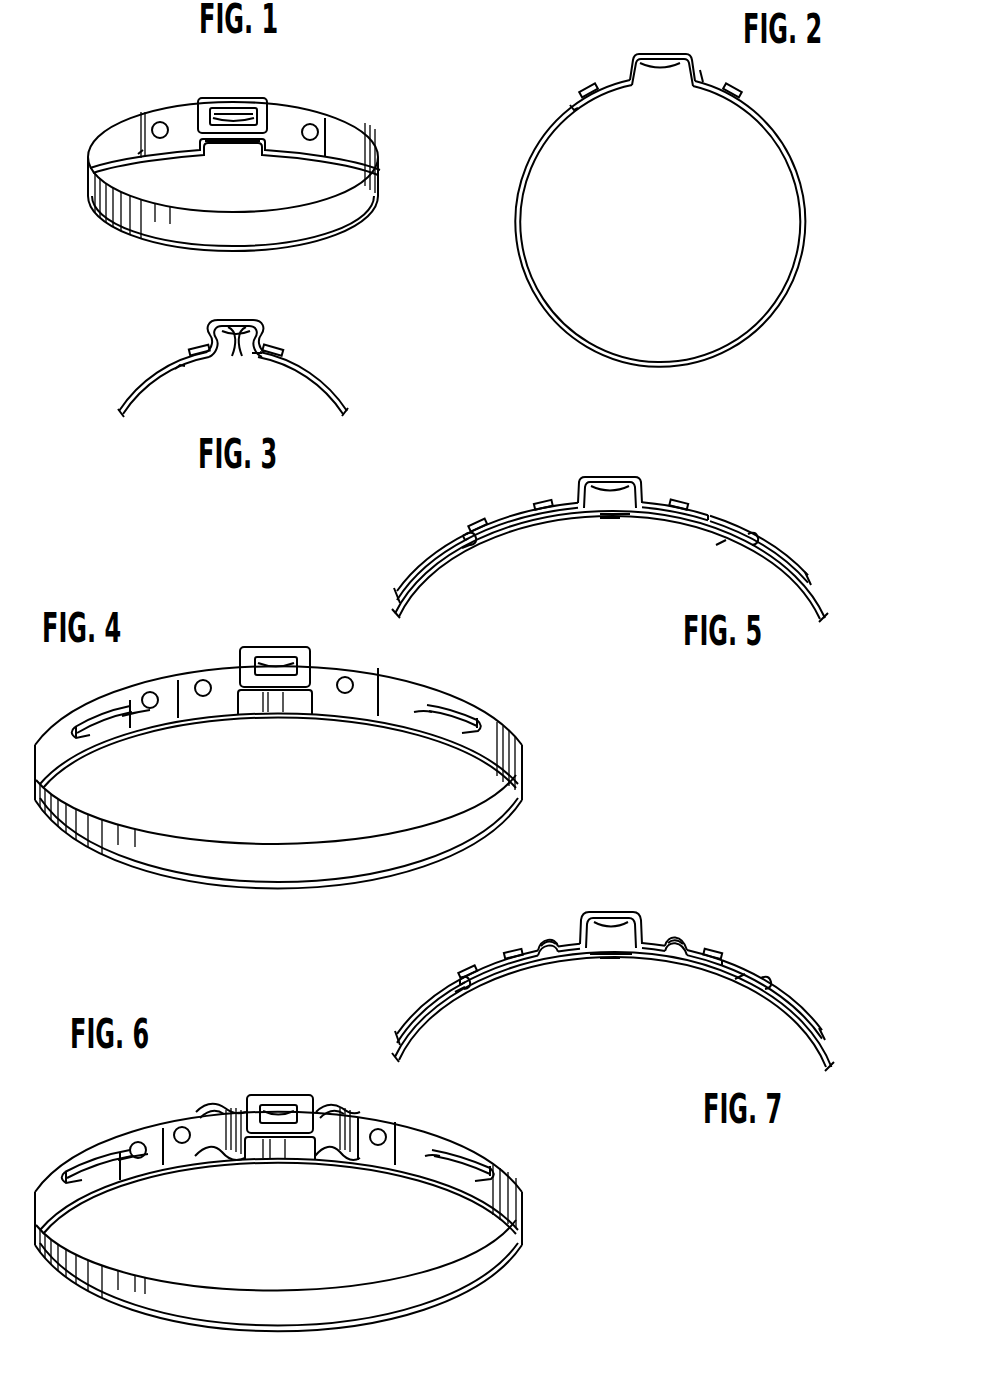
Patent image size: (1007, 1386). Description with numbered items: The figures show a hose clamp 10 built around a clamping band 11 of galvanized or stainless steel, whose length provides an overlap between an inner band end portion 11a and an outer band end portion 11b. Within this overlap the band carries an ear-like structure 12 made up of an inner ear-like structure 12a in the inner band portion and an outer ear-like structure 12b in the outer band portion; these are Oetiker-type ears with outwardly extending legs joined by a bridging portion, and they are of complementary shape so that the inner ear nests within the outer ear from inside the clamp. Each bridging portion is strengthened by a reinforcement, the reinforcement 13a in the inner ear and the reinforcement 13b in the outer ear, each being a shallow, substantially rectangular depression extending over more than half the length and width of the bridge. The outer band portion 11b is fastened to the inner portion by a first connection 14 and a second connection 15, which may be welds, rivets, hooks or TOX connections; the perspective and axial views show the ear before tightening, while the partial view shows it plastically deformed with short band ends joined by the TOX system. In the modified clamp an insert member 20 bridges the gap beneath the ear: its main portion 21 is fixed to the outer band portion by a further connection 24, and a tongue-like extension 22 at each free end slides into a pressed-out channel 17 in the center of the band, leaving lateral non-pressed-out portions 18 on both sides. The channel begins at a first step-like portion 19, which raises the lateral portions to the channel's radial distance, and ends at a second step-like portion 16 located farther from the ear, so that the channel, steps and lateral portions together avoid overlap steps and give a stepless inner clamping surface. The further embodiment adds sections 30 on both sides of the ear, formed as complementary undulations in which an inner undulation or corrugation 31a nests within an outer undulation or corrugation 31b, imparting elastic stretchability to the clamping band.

In FIG. 1, the hose clamp 10 is at (386, 164).
In FIG. 6, the hose clamp 10 is at (530, 1250).
In FIG. 1, the clamping band 11 is at (320, 226).
In FIG. 2, the clamping band 11 is at (555, 314).
In FIG. 3, the clamping band 11 is at (233, 384).
In FIG. 4, the clamping band 11 is at (340, 856).
In FIG. 5, the clamping band 11 is at (610, 566).
In FIG. 6, the clamping band 11 is at (305, 1305).
In FIG. 7, the clamping band 11 is at (613, 1011).
In FIG. 1, the inner band end portion 11a is at (162, 160).
In FIG. 2, the inner band end portion 11a is at (600, 98).
In FIG. 3, the inner band end portion 11a is at (200, 366).
In FIG. 4, the inner band end portion 11a is at (196, 716).
In FIG. 5, the inner band end portion 11a is at (555, 516).
In FIG. 6, the inner band end portion 11a is at (180, 1166).
In FIG. 7, the inner band end portion 11a is at (510, 966).
In FIG. 1, the outer band end portion 11b is at (290, 118).
In FIG. 2, the outer band end portion 11b is at (703, 78).
In FIG. 3, the outer band end portion 11b is at (255, 352).
In FIG. 4, the outer band end portion 11b is at (325, 684).
In FIG. 5, the outer band end portion 11b is at (655, 496).
In FIG. 6, the outer band end portion 11b is at (370, 1130).
In FIG. 7, the outer band end portion 11b is at (726, 961).
In FIG. 1, the ear-like structure 12 is at (254, 95).
In FIG. 2, the ear-like structure 12 is at (680, 53).
In FIG. 3, the ear-like structure 12 is at (237, 316).
In FIG. 4, the ear-like structure 12 is at (283, 645).
In FIG. 5, the ear-like structure 12 is at (611, 472).
In FIG. 6, the ear-like structure 12 is at (283, 1094).
In FIG. 7, the ear-like structure 12 is at (607, 904).
In FIG. 1, the inner ear-like structure 12a is at (222, 142).
In FIG. 7, the inner ear-like structure 12a is at (610, 920).
In FIG. 1, the outer ear-like structure 12b is at (229, 100).
In FIG. 2, the outer ear-like structure 12b is at (662, 53).
In FIG. 4, the outer ear-like structure 12b is at (271, 645).
In FIG. 6, the outer ear-like structure 12b is at (278, 1114).
In FIG. 7, the outer ear-like structure 12b is at (622, 912).
In FIG. 2, the reinforcement 13a is at (660, 73).
In FIG. 5, the reinforcement 13a is at (610, 488).
In FIG. 1, the reinforcement 13b is at (250, 126).
In FIG. 1, the first connection 14 is at (156, 121).
In FIG. 2, the first connection 14 is at (587, 85).
In FIG. 3, the first connection 14 is at (194, 350).
In FIG. 4, the first connection 14 is at (205, 679).
In FIG. 5, the first connection 14 is at (548, 496).
In FIG. 6, the first connection 14 is at (179, 1126).
In FIG. 7, the first connection 14 is at (510, 948).
In FIG. 1, the second connection 15 is at (318, 128).
In FIG. 2, the second connection 15 is at (740, 90).
In FIG. 3, the second connection 15 is at (284, 352).
In FIG. 4, the second connection 15 is at (355, 688).
In FIG. 5, the second connection 15 is at (681, 496).
In FIG. 6, the second connection 15 is at (387, 1137).
In FIG. 7, the second connection 15 is at (719, 952).
In FIG. 4, the second step-like portion 16 is at (80, 725).
In FIG. 5, the second step-like portion 16 is at (803, 590).
In FIG. 6, the second step-like portion 16 is at (75, 1172).
In FIG. 7, the second step-like portion 16 is at (405, 1040).
In FIG. 4, the pressed-out channel 17 is at (100, 720).
In FIG. 5, the pressed-out channel 17 is at (422, 568).
In FIG. 6, the pressed-out channel 17 is at (95, 1160).
In FIG. 7, the pressed-out channel 17 is at (428, 1015).
In FIG. 4, the lateral non-pressed-out portions 18 is at (125, 700).
In FIG. 6, the lateral non-pressed-out portions 18 is at (108, 1140).
In FIG. 4, the first step-like portion 19 is at (135, 731).
In FIG. 5, the first step-like portion 19 is at (455, 540).
In FIG. 6, the first step-like portion 19 is at (125, 1186).
In FIG. 7, the first step-like portion 19 is at (460, 998).
In FIG. 4, the insert member 20 is at (258, 716).
In FIG. 5, the insert member 20 is at (625, 524).
In FIG. 6, the insert member 20 is at (280, 1148).
In FIG. 4, the main portion 21 is at (287, 716).
In FIG. 5, the main portion 21 is at (607, 518).
In FIG. 6, the main portion 21 is at (274, 1148).
In FIG. 7, the main portion 21 is at (625, 956).
In FIG. 5, the tongue-like extension 22 is at (467, 546).
In FIG. 7, the tongue-like extension 22 is at (455, 1000).
In FIG. 4, the further connection 24 is at (152, 691).
In FIG. 5, the further connection 24 is at (477, 522).
In FIG. 6, the further connection 24 is at (140, 1141).
In FIG. 7, the further connection 24 is at (468, 970).
In FIG. 6, the sections 30 is at (209, 1104).
In FIG. 7, the sections 30 is at (546, 929).
In FIG. 6, the inner undulation or corrugation 31a is at (212, 1162).
In FIG. 7, the inner undulation or corrugation 31a is at (548, 957).
In FIG. 6, the outer undulation or corrugation 31b is at (220, 1108).
In FIG. 7, the outer undulation or corrugation 31b is at (555, 936).